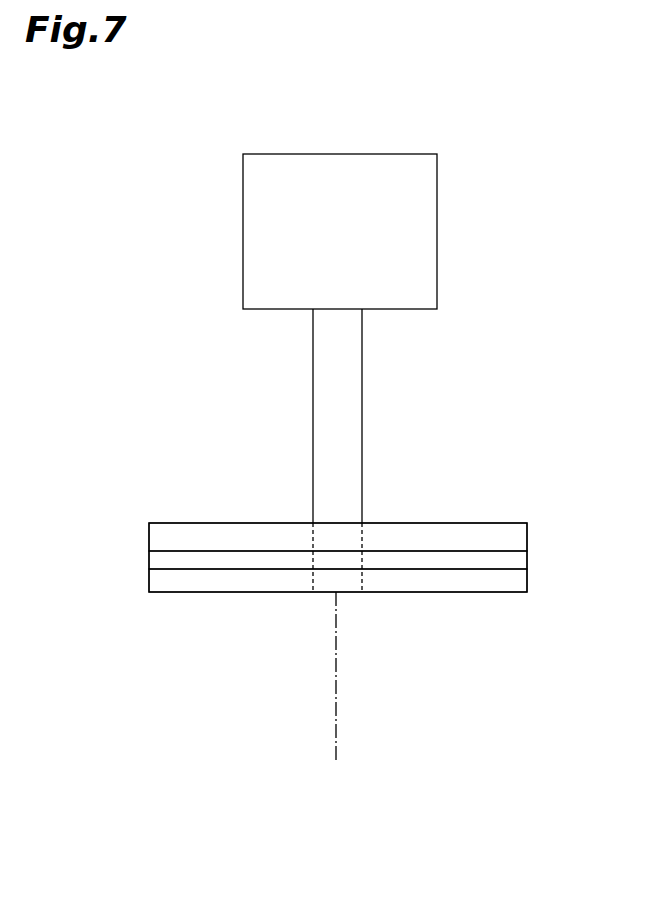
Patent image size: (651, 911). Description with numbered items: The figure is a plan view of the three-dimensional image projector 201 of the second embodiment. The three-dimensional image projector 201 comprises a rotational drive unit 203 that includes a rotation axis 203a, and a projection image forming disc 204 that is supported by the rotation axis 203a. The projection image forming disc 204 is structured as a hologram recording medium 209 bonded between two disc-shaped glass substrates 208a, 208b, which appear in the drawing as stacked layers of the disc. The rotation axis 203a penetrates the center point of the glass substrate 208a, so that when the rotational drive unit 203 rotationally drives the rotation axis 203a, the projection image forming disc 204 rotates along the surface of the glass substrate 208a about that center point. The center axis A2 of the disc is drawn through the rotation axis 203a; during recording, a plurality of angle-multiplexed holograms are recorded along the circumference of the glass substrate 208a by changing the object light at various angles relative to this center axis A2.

The three-dimensional image projector 201 is at (504, 136).
The rotational drive unit 203 is at (422, 245).
The rotation axis 203a is at (347, 430).
The projection image forming disc 204 is at (333, 545).
The glass substrate 208a is at (160, 538).
The hologram recording medium 209 is at (160, 559).
The glass substrate 208b is at (160, 579).
The center axis A2 is at (337, 676).